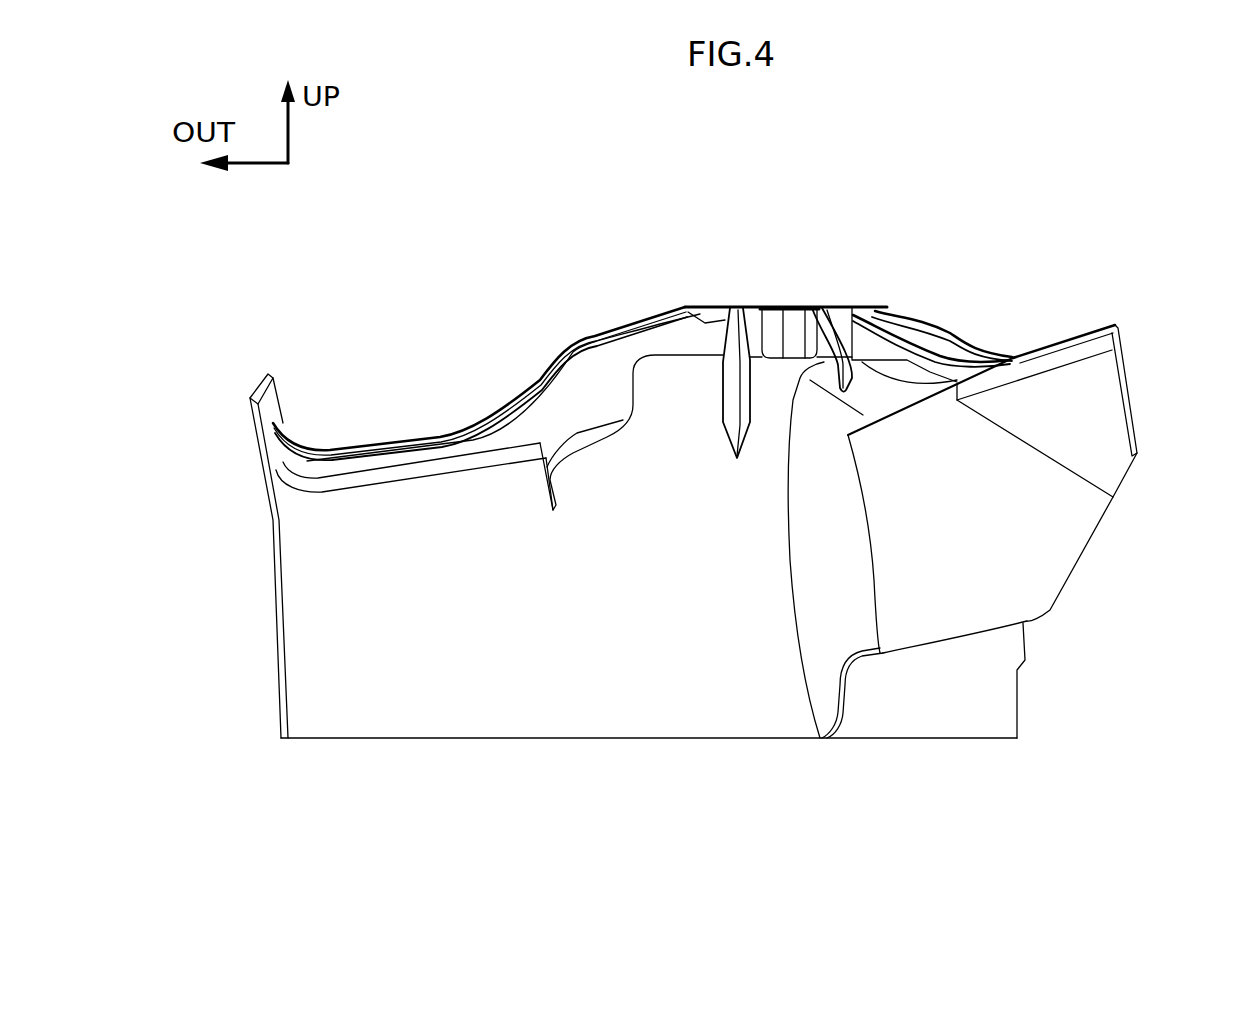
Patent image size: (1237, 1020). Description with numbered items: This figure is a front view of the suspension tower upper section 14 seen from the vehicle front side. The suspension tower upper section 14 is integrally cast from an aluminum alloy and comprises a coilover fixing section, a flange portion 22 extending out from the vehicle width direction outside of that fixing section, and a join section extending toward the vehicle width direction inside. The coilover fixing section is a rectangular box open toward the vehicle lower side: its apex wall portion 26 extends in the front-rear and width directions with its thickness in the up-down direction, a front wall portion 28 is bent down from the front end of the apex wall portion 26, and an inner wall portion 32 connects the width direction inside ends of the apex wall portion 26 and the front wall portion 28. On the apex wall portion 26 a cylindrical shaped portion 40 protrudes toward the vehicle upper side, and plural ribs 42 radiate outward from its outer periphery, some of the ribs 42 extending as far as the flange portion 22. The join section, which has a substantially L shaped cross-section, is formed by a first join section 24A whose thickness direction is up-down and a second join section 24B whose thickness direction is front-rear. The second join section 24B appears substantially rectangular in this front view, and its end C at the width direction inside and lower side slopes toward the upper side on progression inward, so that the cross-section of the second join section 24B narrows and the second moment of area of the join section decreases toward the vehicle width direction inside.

The suspension tower upper section 14 is at (404, 290).
The flange portion 22 is at (278, 407).
The ribs 42 is at (307, 437).
The apex wall portion 26 is at (683, 303).
The cylindrical shaped portion 40 is at (837, 305).
The first join section 24A is at (1066, 337).
The second join section 24B is at (948, 575).
The front wall portion 28 is at (564, 700).
The inner wall portion 32 is at (1028, 637).
The end C is at (1093, 537).